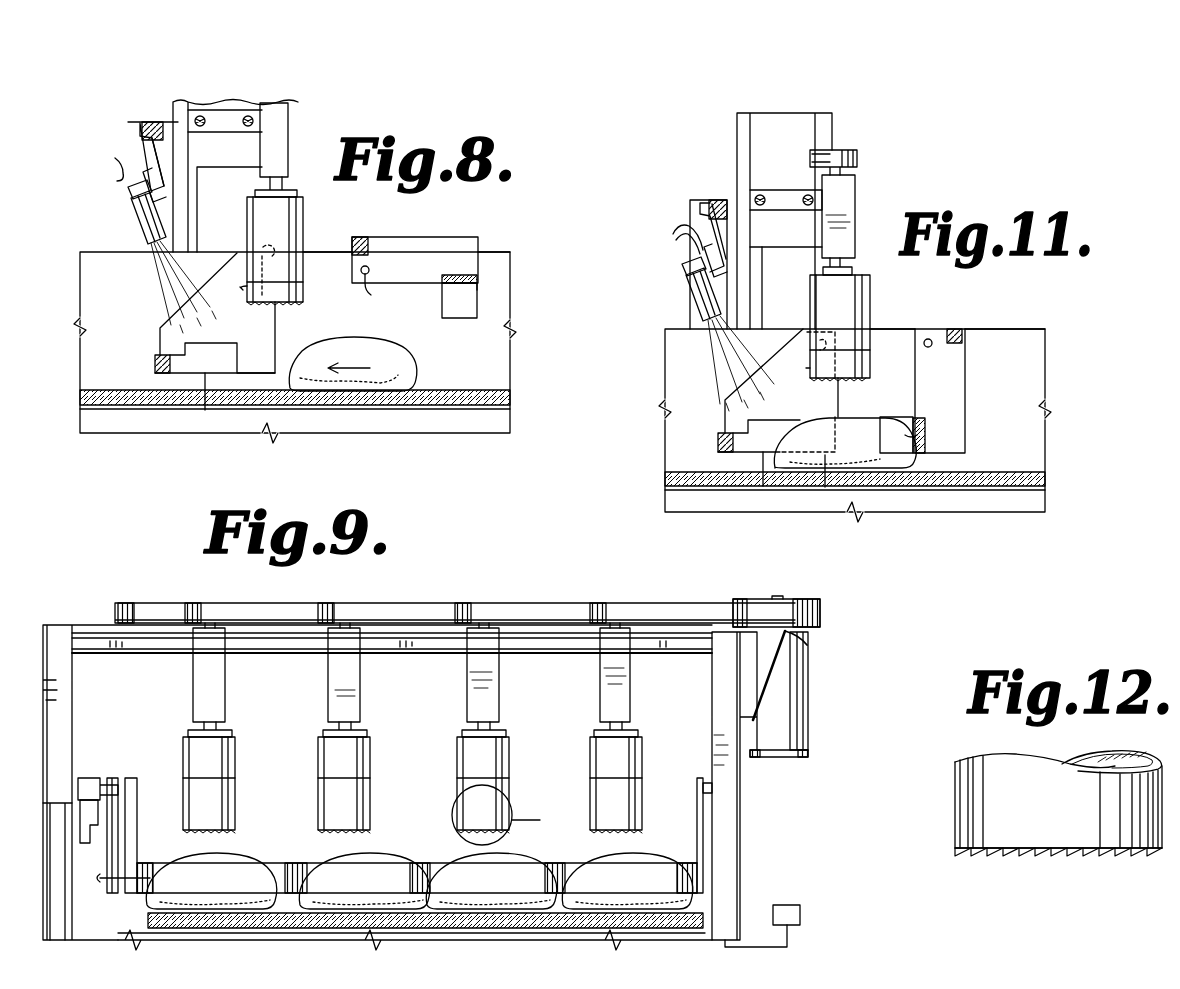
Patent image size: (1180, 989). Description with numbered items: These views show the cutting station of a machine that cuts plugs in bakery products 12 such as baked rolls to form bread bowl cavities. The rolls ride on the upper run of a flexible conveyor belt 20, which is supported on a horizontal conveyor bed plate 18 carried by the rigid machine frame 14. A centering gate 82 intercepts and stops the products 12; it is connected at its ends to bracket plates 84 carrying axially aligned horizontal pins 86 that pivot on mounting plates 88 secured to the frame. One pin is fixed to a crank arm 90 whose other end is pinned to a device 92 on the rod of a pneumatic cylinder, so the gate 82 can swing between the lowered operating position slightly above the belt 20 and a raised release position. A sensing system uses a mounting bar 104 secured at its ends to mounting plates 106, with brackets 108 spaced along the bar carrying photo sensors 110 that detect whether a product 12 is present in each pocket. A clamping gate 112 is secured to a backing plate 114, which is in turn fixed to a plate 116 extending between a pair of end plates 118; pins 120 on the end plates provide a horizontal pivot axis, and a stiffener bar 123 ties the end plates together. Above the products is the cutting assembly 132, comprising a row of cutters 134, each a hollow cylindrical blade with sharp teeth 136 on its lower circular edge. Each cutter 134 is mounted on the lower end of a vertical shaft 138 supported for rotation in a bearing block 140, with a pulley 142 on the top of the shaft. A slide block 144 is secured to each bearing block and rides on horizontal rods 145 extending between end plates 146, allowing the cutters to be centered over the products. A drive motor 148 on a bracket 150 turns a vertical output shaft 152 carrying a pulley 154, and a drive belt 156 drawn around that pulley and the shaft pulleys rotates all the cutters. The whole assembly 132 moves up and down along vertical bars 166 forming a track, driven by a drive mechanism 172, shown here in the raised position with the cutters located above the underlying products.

In FIG. 8, the bakery products 12 is at (395, 345).
In FIG. 11, the bakery products 12 is at (825, 487).
In FIG. 9, the bakery products 12 is at (237, 862).
In FIG. 8, the frame 14 is at (440, 429).
In FIG. 11, the frame 14 is at (1024, 504).
In FIG. 8, the conveyor bed plate 18 is at (500, 410).
In FIG. 11, the conveyor bed plate 18 is at (990, 490).
In FIG. 9, the conveyor bed plate 18 is at (705, 915).
In FIG. 8, the conveyor belt 20 is at (487, 390).
In FIG. 11, the conveyor belt 20 is at (1027, 472).
In FIG. 9, the conveyor belt 20 is at (418, 898).
In FIG. 8, the centering gate 82 is at (205, 410).
In FIG. 11, the centering gate 82 is at (763, 486).
In FIG. 9, the centering gate 82 is at (286, 863).
In FIG. 8, the bracket plates 84 is at (265, 352).
In FIG. 11, the bracket plates 84 is at (720, 420).
In FIG. 9, the bracket plates 84 is at (147, 835).
In FIG. 8, the horizontal pins 86 is at (244, 288).
In FIG. 11, the horizontal pins 86 is at (791, 366).
In FIG. 9, the horizontal pins 86 is at (100, 787).
In FIG. 9, the mounting plates 88 is at (150, 878).
In FIG. 9, the crank arm 90 is at (118, 812).
In FIG. 9, the device 92 is at (84, 843).
In FIG. 8, the mounting bar 104 is at (144, 144).
In FIG. 11, the mounting bar 104 is at (700, 199).
In FIG. 8, the mounting plates 106 is at (140, 127).
In FIG. 11, the mounting plates 106 is at (692, 214).
In FIG. 8, the brackets 108 is at (119, 169).
In FIG. 11, the brackets 108 is at (690, 228).
In FIG. 8, the photo sensors 110 is at (138, 220).
In FIG. 11, the photo sensors 110 is at (694, 298).
In FIG. 8, the clamping gate 112 is at (470, 312).
In FIG. 11, the clamping gate 112 is at (892, 417).
In FIG. 8, the backing plate 114 is at (470, 286).
In FIG. 11, the backing plate 114 is at (925, 436).
In FIG. 8, the plate 116 is at (450, 268).
In FIG. 11, the plate 116 is at (920, 418).
In FIG. 8, the end plates 118 is at (444, 227).
In FIG. 11, the end plates 118 is at (965, 360).
In FIG. 8, the pins 120 is at (383, 288).
In FIG. 11, the pins 120 is at (928, 339).
In FIG. 8, the stiffener bar 123 is at (358, 237).
In FIG. 11, the stiffener bar 123 is at (962, 340).
In FIG. 9, the cutting assembly 132 is at (383, 590).
In FIG. 8, the cutters 134 is at (303, 280).
In FIG. 11, the cutters 134 is at (870, 322).
In FIG. 9, the cutters 134 is at (235, 795).
In FIG. 12, the cutters 134 is at (964, 818).
In FIG. 12, the teeth 136 is at (1052, 858).
In FIG. 8, the vertical shaft 138 is at (286, 188).
In FIG. 11, the vertical shaft 138 is at (848, 265).
In FIG. 9, the vertical shaft 138 is at (218, 728).
In FIG. 8, the bearing block 140 is at (288, 115).
In FIG. 11, the bearing block 140 is at (846, 215).
In FIG. 9, the bearing block 140 is at (225, 672).
In FIG. 11, the pulley 142 is at (856, 150).
In FIG. 8, the slide block 144 is at (232, 122).
In FIG. 11, the slide block 144 is at (776, 192).
In FIG. 11, the horizontal rods 145 is at (754, 192).
In FIG. 9, the horizontal rods 145 is at (162, 649).
In FIG. 8, the end plates 146 is at (238, 160).
In FIG. 11, the end plates 146 is at (780, 247).
In FIG. 9, the drive motor 148 is at (808, 732).
In FIG. 9, the bracket 150 is at (768, 670).
In FIG. 9, the vertical output shaft 152 is at (795, 642).
In FIG. 9, the pulley 154 is at (818, 602).
In FIG. 9, the drive belt 156 is at (645, 611).
In FIG. 9, the vertical bars 166 is at (82, 920).
In FIG. 9, the drive mechanism 172 is at (800, 906).